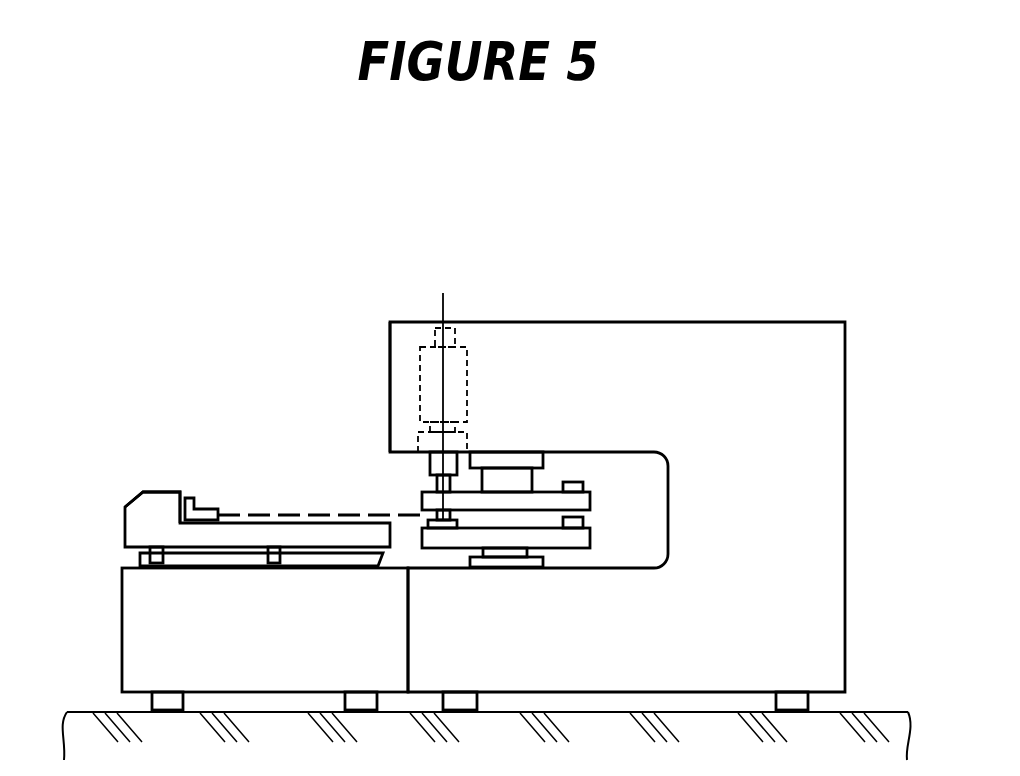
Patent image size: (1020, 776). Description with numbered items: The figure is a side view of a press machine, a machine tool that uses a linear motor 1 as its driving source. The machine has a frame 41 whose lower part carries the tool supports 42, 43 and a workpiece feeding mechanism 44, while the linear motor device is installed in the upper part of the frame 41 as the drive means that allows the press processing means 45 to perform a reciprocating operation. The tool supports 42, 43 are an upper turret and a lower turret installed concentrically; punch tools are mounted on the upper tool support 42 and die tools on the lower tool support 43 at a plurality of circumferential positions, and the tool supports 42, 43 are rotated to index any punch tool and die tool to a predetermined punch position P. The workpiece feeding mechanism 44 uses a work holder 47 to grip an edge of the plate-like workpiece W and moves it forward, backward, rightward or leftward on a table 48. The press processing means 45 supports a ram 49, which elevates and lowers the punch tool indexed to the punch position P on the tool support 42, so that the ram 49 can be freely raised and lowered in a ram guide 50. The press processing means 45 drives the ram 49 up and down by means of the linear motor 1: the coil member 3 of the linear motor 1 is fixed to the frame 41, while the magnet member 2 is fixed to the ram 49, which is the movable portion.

The linear motor 1 is at (333, 268).
The magnet member 2 is at (436, 332).
The coil member 3 is at (428, 360).
The punch position P is at (442, 305).
The frame 41 is at (820, 446).
The upper tool support 42 is at (437, 500).
The lower tool support 43 is at (493, 548).
The workpiece feeding mechanism 44 is at (122, 502).
The press processing means 45 is at (497, 360).
The work holder 47 is at (203, 510).
The table 48 is at (252, 535).
The ram 49 is at (426, 452).
The ram guide 50 is at (432, 462).
The workpiece W is at (308, 510).